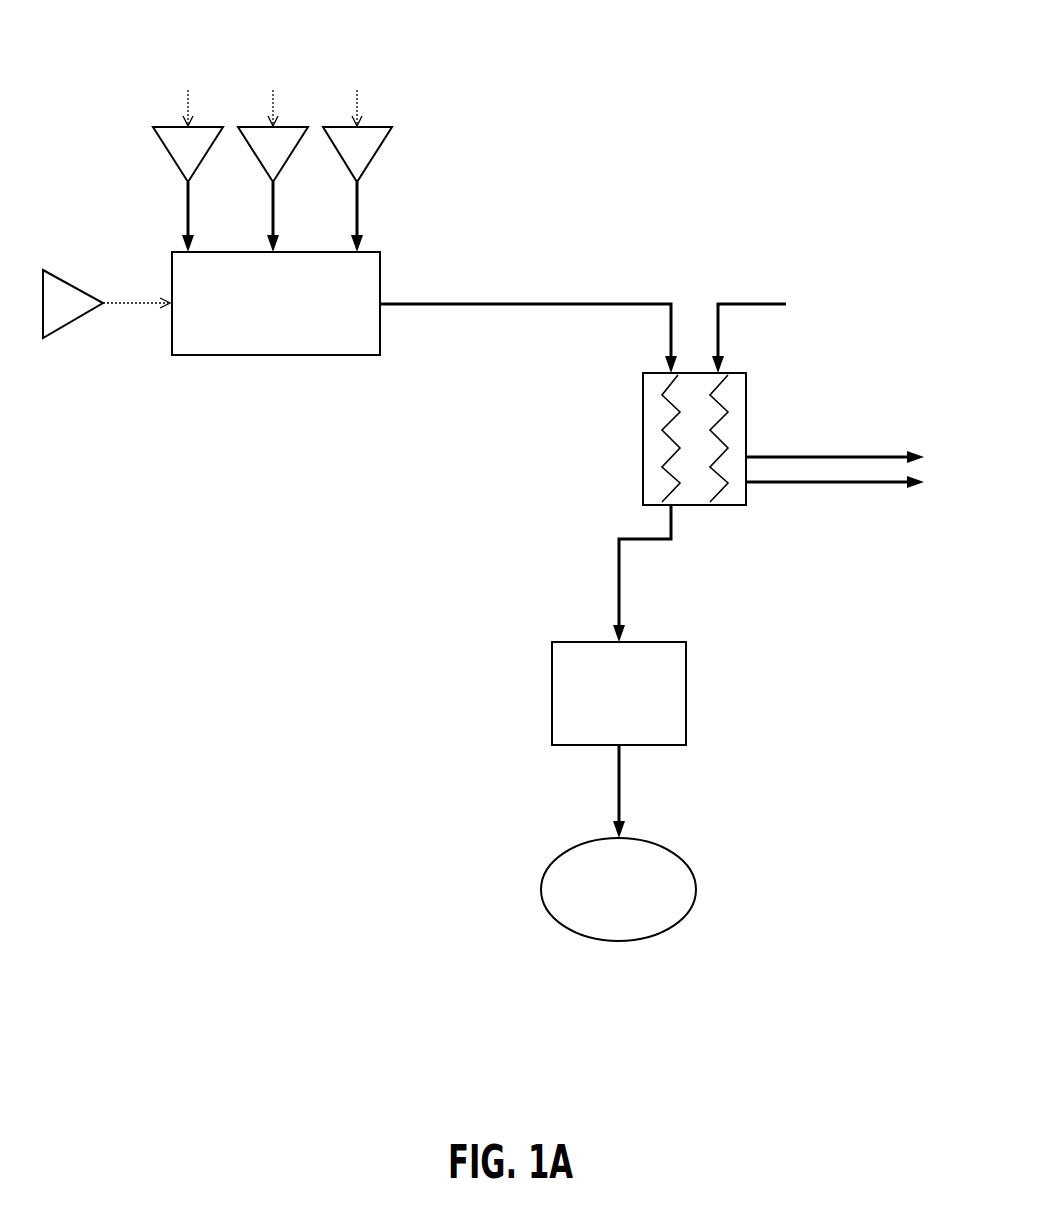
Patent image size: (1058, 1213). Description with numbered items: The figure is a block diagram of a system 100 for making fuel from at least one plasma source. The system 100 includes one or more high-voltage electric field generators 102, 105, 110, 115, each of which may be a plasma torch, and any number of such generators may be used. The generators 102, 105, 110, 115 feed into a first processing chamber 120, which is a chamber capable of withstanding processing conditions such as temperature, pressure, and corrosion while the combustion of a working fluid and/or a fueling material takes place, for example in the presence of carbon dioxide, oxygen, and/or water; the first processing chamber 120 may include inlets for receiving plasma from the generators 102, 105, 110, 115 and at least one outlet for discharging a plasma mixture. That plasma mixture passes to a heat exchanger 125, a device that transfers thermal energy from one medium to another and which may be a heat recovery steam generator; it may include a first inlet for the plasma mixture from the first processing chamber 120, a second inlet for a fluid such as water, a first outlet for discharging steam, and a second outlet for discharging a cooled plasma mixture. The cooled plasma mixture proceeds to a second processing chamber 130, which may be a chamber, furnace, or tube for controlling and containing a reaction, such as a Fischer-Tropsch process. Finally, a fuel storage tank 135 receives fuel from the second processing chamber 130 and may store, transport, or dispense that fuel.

The system 100 is at (722, 122).
The high-voltage electric field generator 102 is at (68, 281).
The high-voltage electric field generator 105 is at (160, 135).
The high-voltage electric field generator 110 is at (290, 126).
The high-voltage electric field generator 115 is at (382, 152).
The first processing chamber 120 is at (383, 354).
The heat exchanger 125 is at (643, 463).
The second processing chamber 130 is at (552, 705).
The fuel storage tank 135 is at (696, 900).